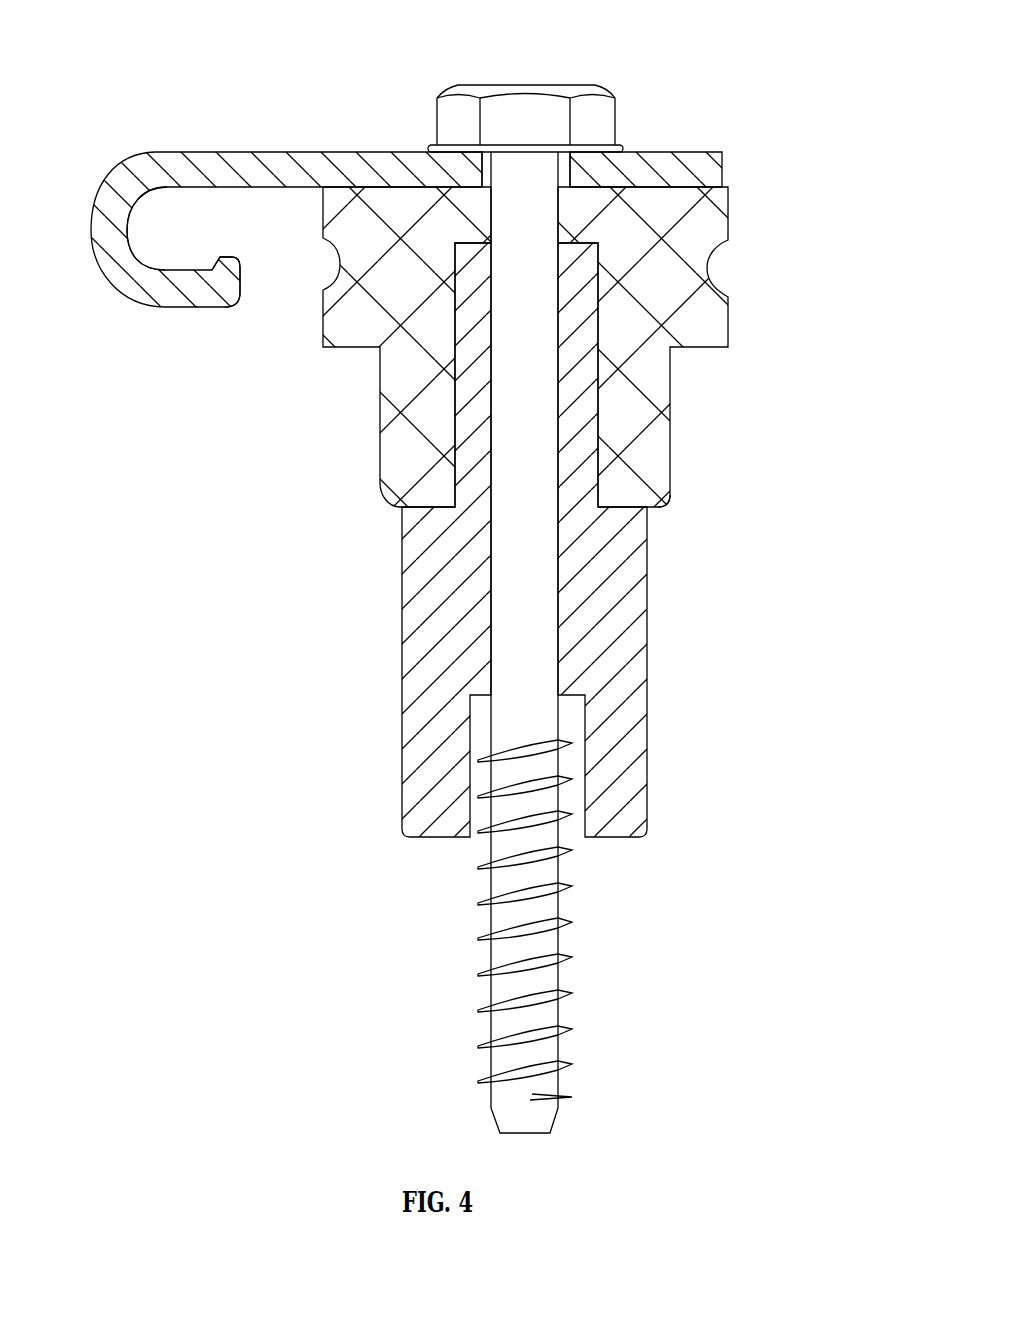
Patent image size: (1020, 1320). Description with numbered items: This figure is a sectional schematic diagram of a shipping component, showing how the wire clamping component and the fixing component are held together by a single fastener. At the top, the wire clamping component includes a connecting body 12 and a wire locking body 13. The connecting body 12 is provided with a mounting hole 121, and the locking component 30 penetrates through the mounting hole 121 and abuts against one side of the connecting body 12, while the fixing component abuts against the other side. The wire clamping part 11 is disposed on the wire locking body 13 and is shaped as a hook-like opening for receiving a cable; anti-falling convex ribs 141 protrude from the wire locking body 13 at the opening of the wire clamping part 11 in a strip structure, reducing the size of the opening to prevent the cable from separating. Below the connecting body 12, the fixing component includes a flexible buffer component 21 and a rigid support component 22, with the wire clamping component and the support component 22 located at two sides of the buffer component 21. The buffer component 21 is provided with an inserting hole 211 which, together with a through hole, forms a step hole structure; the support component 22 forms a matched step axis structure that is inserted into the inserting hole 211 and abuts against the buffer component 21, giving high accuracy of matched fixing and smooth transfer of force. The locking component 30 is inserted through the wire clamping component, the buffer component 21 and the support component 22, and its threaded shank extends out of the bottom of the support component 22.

The wire clamping part 11 is at (127, 226).
The connecting body 12 is at (663, 163).
The mounting hole 121 is at (481, 173).
The wire locking body 13 is at (300, 152).
The anti-falling convex ribs 141 is at (220, 258).
The buffer component 21 is at (645, 360).
The inserting hole 211 is at (597, 430).
The support component 22 is at (632, 645).
The locking component 30 is at (573, 123).